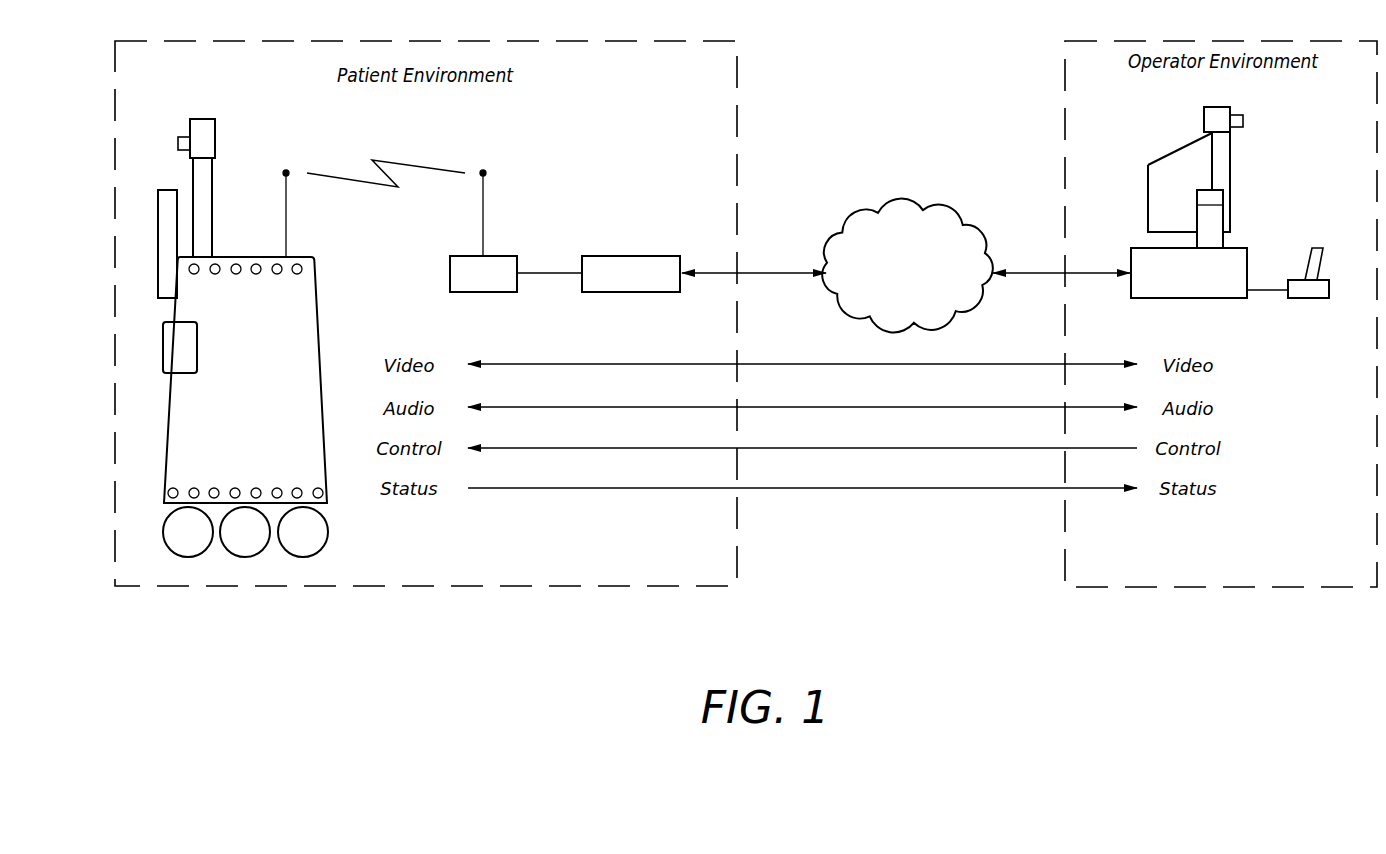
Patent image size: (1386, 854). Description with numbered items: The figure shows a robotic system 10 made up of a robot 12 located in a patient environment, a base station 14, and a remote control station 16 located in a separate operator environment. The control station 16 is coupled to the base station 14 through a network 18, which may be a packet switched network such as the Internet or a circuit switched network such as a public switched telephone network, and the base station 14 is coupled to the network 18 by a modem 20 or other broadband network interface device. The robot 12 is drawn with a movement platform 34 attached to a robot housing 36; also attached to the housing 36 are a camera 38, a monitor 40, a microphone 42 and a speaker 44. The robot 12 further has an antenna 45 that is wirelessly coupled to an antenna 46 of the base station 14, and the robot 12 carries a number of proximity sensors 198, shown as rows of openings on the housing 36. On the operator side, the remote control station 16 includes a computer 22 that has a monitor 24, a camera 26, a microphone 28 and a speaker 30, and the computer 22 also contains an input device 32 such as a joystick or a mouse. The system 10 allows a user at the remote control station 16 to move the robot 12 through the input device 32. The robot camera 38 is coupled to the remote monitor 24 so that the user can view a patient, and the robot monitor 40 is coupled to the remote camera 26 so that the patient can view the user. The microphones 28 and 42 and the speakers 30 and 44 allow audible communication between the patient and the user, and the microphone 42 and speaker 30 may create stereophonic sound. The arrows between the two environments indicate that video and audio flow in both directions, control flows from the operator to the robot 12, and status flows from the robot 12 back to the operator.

The robotic system 10 is at (906, 198).
The robot 12 is at (277, 323).
The base station 14 is at (498, 256).
The remote control station 16 is at (1165, 205).
The network 18 is at (907, 266).
The modem 20 is at (631, 256).
The computer 22 is at (1220, 293).
The monitor 24 is at (1223, 160).
The camera 26 is at (1212, 118).
The microphone 28 is at (1205, 193).
The speaker 30 is at (1217, 242).
The input device 32 is at (1320, 288).
The movement platform 34 is at (307, 538).
The robot housing 36 is at (202, 465).
The camera 38 is at (211, 150).
The monitor 40 is at (168, 232).
The microphone 42 is at (203, 127).
The speaker 44 is at (163, 353).
The antenna 45 is at (286, 170).
The antenna 46 is at (483, 170).
The proximity sensors 198 is at (168, 492).